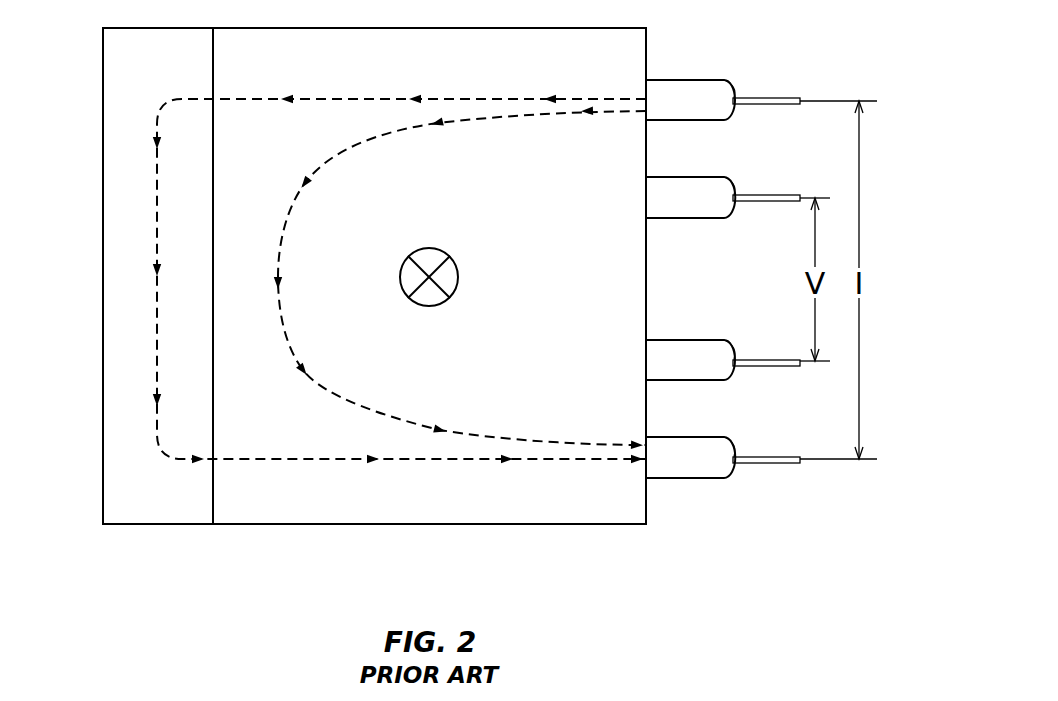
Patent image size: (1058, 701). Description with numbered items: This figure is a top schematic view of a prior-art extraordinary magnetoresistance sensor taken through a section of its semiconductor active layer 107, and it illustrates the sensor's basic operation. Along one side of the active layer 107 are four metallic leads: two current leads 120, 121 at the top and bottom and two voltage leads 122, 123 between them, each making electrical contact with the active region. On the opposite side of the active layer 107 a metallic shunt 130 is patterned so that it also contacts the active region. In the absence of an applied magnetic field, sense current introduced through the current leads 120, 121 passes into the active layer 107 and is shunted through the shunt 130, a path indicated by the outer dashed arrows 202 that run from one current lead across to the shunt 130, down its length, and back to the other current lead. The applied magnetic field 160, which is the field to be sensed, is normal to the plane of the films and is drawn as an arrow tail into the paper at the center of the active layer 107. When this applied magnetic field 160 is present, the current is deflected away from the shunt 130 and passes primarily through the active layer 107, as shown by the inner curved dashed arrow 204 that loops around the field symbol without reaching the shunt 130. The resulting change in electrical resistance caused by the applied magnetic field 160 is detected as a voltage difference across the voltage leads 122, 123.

The active layer 107 is at (553, 510).
The metallic shunt 130 is at (112, 467).
The arrows 202 is at (320, 98).
The arrow 204 is at (328, 395).
The applied magnetic field 160 is at (439, 248).
The current lead 120 is at (707, 89).
The voltage lead 122 is at (707, 187).
The voltage lead 123 is at (707, 350).
The current lead 121 is at (707, 453).